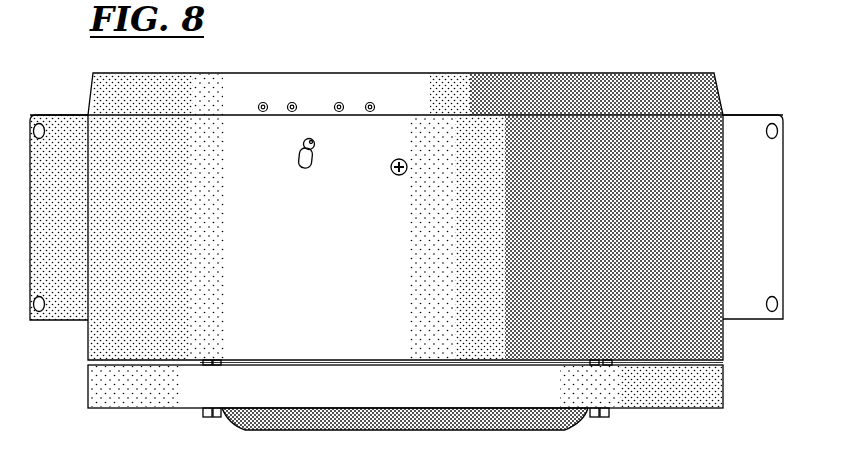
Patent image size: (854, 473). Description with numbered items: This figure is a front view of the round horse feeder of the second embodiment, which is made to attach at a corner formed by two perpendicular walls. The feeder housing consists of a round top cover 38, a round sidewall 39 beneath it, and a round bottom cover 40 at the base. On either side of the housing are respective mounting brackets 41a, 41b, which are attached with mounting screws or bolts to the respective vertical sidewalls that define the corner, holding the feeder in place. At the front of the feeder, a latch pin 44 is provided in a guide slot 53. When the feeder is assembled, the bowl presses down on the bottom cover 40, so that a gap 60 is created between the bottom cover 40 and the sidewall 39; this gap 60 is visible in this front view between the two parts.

The round top cover 38 is at (362, 72).
The round sidewall 39 is at (361, 286).
The round bottom cover 40 is at (488, 401).
The mounting bracket 41a is at (746, 136).
The mounting bracket 41b is at (62, 150).
The latch pin 44 is at (303, 139).
The guide slot 53 is at (305, 170).
The gap 60 is at (723, 362).